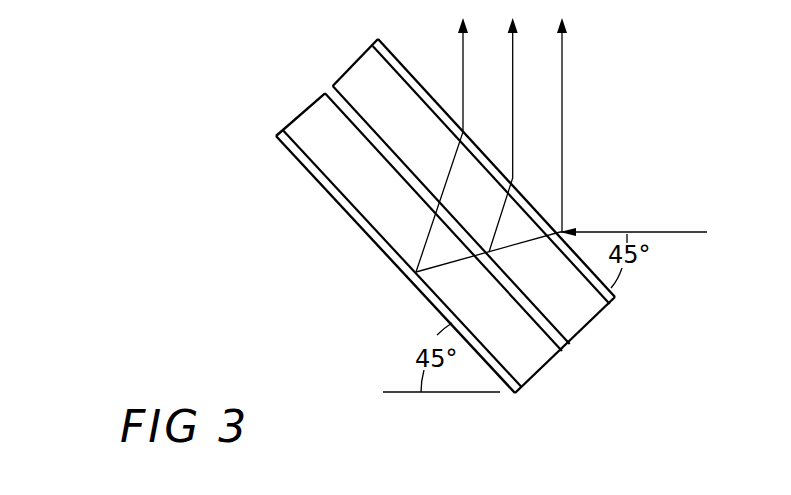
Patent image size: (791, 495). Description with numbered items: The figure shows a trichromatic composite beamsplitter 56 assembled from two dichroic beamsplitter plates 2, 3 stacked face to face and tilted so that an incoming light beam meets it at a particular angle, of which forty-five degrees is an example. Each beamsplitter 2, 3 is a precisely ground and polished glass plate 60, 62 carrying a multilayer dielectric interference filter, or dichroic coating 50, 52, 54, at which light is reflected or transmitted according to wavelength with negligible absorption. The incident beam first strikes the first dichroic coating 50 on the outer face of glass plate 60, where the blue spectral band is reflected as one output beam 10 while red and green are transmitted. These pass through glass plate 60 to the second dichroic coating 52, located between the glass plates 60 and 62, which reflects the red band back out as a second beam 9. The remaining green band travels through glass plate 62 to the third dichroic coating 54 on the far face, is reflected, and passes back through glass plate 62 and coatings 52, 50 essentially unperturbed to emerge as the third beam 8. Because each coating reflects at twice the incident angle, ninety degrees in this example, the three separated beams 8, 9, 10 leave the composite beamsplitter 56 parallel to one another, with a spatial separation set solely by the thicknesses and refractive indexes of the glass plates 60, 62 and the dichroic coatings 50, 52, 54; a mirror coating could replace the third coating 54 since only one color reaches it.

The beamsplitter plate 2 is at (346, 68).
The beamsplitter plate 3 is at (298, 117).
The reflected light beam 8 is at (463, 77).
The reflected light beam 9 is at (513, 77).
The reflected light beam 10 is at (563, 77).
The first dichroic coating 50 is at (617, 295).
The second dichroic coating 52 is at (565, 340).
The third dichroic coating 54 is at (518, 395).
The composite beamsplitter 56 is at (347, 262).
The glass plate 60 is at (382, 100).
The glass plate 62 is at (339, 150).